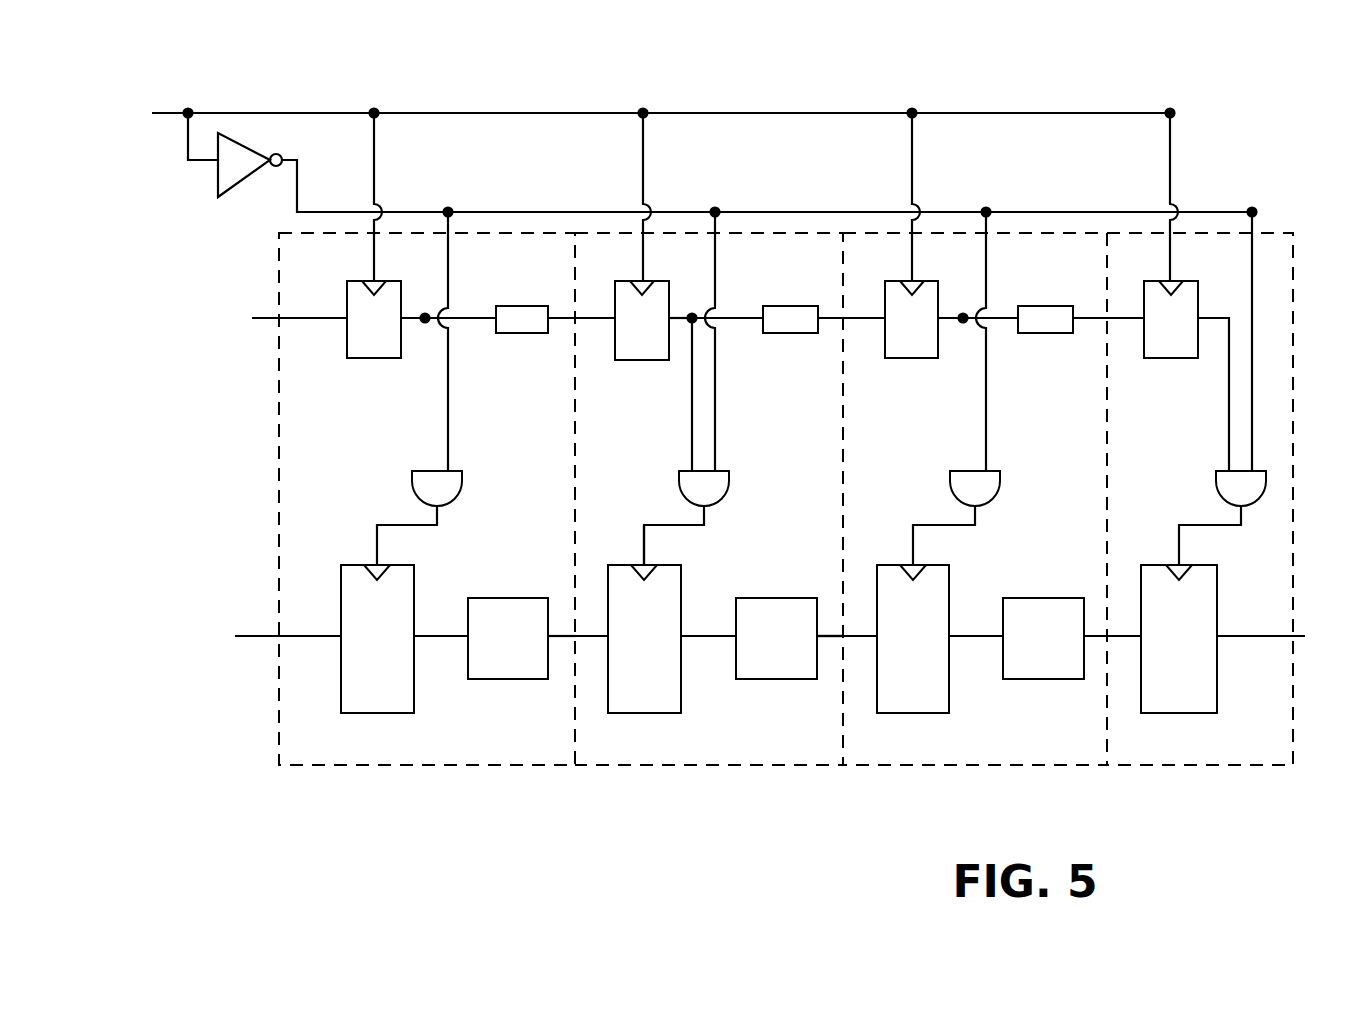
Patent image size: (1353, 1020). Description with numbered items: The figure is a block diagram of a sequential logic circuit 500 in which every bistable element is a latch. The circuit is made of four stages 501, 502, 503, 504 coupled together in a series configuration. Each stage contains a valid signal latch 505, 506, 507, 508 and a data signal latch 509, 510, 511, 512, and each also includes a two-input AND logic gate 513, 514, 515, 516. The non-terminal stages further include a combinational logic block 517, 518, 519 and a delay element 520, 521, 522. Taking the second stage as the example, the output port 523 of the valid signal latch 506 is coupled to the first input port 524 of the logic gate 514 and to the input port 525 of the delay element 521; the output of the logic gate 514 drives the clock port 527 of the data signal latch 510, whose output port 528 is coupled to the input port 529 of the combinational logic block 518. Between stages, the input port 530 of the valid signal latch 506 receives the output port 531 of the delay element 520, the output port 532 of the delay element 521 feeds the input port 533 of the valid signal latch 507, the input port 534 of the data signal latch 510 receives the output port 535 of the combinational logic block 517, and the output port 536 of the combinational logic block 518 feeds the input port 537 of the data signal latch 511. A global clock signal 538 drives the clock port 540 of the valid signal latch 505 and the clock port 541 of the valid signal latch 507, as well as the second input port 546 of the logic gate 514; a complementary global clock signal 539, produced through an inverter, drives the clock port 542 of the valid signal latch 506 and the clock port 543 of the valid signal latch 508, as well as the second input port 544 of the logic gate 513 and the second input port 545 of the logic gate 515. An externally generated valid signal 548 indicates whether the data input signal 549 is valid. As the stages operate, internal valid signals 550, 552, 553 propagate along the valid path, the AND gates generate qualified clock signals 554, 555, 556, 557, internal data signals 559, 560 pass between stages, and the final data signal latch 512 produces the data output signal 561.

The sequential logic circuit 500 is at (872, 68).
The stage 501 is at (483, 745).
The stage 502 is at (710, 745).
The stage 503 is at (980, 745).
The stage 504 is at (1190, 745).
The valid signal latch 505 is at (374, 319).
The valid signal latch 506 is at (642, 320).
The valid signal latch 507 is at (911, 319).
The valid signal latch 508 is at (1171, 319).
The data signal latch 509 is at (377, 639).
The data signal latch 510 is at (644, 639).
The data signal latch 511 is at (913, 639).
The data signal latch 512 is at (1179, 639).
The logic gate 513 is at (437, 488).
The logic gate 514 is at (704, 488).
The logic gate 515 is at (975, 488).
The logic gate 516 is at (1241, 488).
The combinational logic block 517 is at (481, 638).
The combinational logic block 518 is at (776, 638).
The combinational logic block 519 is at (1016, 638).
The delay element 520 is at (522, 319).
The delay element 521 is at (790, 319).
The delay element 522 is at (1045, 319).
The output port 523 is at (688, 298).
The first input port 524 is at (671, 394).
The input port 525 is at (739, 331).
The clock port 527 is at (664, 545).
The output port 528 is at (708, 623).
The input port 529 is at (709, 649).
The input port 530 is at (581, 305).
The output port 531 is at (700, 264).
The output port 532 is at (851, 331).
The input port 533 is at (863, 303).
The input port 534 is at (578, 620).
The output port 535 is at (568, 650).
The output port 536 is at (837, 649).
The input port 537 is at (847, 621).
The global clock signal 538 is at (559, 627).
The complementary global clock signal 539 is at (290, 200).
The clock port 540 is at (392, 197).
The clock port 541 is at (930, 197).
The clock port 542 is at (660, 197).
The clock port 543 is at (1190, 197).
The second input port 544 is at (464, 341).
The second input port 545 is at (1001, 341).
The second input port 546 is at (732, 341).
The valid signal 548 is at (277, 318).
The data input signal 549 is at (741, 430).
The internal valid signal 550 is at (428, 308).
The internal valid signal 552 is at (968, 308).
The internal valid signal 553 is at (1233, 310).
The qualified clock signal 554 is at (407, 535).
The qualified clock signal 555 is at (683, 532).
The qualified clock signal 556 is at (933, 533).
The qualified clock signal 557 is at (1190, 533).
The internal data signal 559 is at (829, 627).
The internal data signal 560 is at (1097, 627).
The data output signal 561 is at (1285, 636).